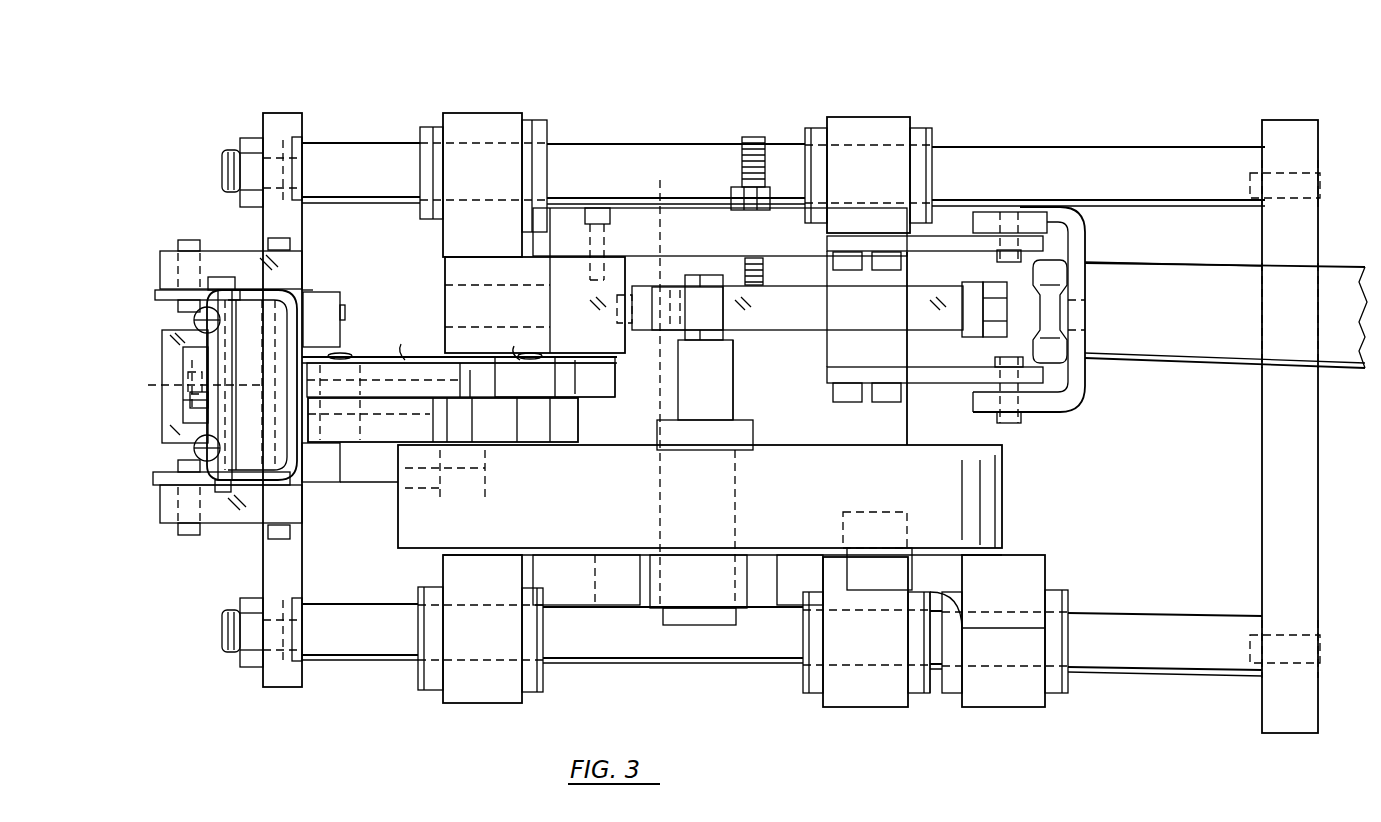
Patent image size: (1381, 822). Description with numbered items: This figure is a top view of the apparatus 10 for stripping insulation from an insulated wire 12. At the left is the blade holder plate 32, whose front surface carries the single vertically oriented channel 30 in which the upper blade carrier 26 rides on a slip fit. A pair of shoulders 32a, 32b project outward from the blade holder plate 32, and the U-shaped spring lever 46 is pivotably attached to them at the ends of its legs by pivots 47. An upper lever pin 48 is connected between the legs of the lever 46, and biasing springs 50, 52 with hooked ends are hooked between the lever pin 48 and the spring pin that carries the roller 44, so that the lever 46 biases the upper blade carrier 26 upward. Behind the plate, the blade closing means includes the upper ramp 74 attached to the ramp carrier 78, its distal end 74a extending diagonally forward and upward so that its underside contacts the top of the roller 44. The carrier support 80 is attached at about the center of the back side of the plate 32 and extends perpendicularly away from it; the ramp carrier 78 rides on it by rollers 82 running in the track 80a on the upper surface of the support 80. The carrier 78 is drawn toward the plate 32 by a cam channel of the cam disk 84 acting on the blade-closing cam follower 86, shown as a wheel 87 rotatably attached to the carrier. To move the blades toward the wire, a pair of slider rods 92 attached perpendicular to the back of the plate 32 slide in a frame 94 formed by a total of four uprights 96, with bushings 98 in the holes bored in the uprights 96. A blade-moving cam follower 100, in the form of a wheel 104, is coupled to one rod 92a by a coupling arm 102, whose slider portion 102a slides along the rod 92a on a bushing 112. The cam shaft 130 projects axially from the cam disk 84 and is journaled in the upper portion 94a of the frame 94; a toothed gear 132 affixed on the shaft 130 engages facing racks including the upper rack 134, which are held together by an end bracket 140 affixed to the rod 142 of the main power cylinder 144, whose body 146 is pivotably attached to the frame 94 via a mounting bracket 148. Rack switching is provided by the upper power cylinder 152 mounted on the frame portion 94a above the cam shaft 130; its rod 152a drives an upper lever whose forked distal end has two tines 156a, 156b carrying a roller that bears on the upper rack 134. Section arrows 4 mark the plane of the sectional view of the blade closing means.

The apparatus 10 is at (1024, 80).
The insulated wire 12 is at (432, 298).
The section line 4 is at (257, 312).
The upper blade carrier 26 is at (183, 362).
The channel 30 is at (162, 345).
The blade holder plate 32 is at (300, 300).
The shoulder 32a is at (155, 514).
The shoulder 32b is at (160, 254).
The roller 44 is at (181, 385).
The U-shaped spring lever 46 is at (155, 293).
The pivots 47 is at (184, 240).
The upper lever pin 48 is at (218, 276).
The biasing spring 50 is at (193, 452).
The biasing spring 52 is at (192, 318).
The upper ramp 74 is at (418, 378).
The distal end of upper ramp 74a is at (183, 402).
The ramp carrier 78 is at (578, 433).
The carrier support 80 is at (588, 397).
The track 80a is at (616, 382).
The rollers 82 is at (401, 356).
The cam disk 84 is at (398, 515).
The blade-closing cam follower 86 is at (398, 469).
The wheel 87 is at (386, 487).
The slider rods 92 is at (392, 138).
The slider rod 92a is at (1150, 675).
The frame 94 is at (512, 118).
The upper portion of frame 94a is at (636, 208).
The uprights 96 is at (468, 113).
The bushings 98 is at (550, 126).
The blade-moving cam follower 100 is at (906, 512).
The coupling arm 102 is at (1045, 565).
The slider portion 102a is at (1030, 703).
The wheel 104 is at (844, 512).
The bushing 112 is at (1060, 593).
The cam shaft 130 is at (735, 394).
The toothed gear 132 is at (769, 330).
The upper rack 134 is at (922, 292).
The end bracket 140 is at (966, 340).
The rod of main power cylinder 142 is at (1010, 335).
The main power cylinder 144 is at (1172, 369).
The body of main power cylinder 146 is at (1204, 370).
The mounting bracket 148 is at (1070, 408).
The upper power cylinder 152 is at (548, 274).
The rod of upper power cylinder 152a is at (638, 293).
The tine 156a is at (716, 336).
The tine 156b is at (723, 236).